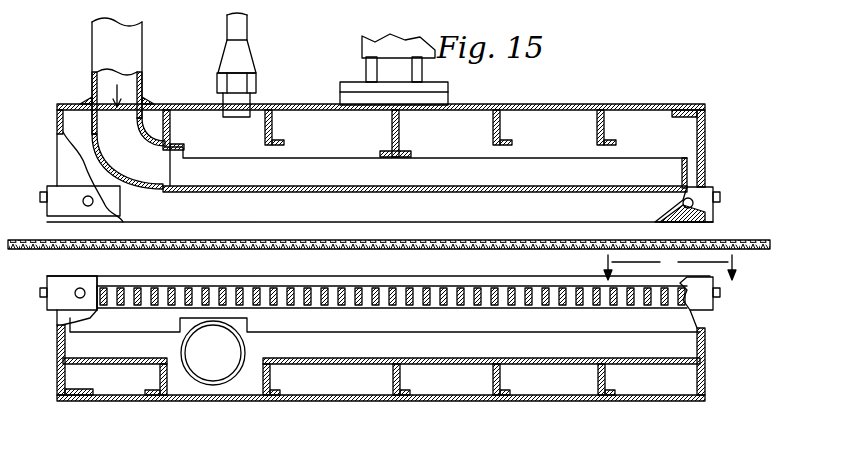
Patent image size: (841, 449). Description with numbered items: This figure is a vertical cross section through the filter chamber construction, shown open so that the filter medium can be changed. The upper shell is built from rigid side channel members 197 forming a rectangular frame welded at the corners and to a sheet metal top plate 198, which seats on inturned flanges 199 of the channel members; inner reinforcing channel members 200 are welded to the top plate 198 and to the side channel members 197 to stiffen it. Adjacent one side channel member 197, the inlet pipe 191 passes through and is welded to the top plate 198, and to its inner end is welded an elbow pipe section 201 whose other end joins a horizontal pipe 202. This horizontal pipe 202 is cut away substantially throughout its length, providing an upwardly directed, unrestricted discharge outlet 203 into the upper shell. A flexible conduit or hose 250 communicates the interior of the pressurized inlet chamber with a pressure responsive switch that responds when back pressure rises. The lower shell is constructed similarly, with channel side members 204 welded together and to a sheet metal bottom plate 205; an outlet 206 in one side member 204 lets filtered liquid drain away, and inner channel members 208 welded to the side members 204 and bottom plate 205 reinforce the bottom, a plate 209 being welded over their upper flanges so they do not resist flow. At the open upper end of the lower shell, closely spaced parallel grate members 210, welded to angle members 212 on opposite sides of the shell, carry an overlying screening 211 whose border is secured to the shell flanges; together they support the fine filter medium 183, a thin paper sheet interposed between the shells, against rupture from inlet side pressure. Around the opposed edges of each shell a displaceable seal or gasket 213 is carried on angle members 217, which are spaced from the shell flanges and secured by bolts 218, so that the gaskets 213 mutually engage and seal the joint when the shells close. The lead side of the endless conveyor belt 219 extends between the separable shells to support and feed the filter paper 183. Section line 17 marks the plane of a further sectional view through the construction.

The section line 17- 17 is at (671, 266).
The fine filter medium 183 is at (747, 242).
The inlet pipe 191 is at (100, 55).
The side channel members 197 is at (57, 124).
The top plate 198 is at (650, 92).
The inturned flanges 199 is at (79, 104).
The inner reinforcing channel members 200 is at (265, 130).
The elbow pipe section 201 is at (142, 190).
The horizontal pipe 202 is at (372, 193).
The discharge outlet 203 is at (533, 158).
The channel side members 204 is at (58, 351).
The bottom plate 205 is at (583, 400).
The outlet 206 is at (220, 374).
The inner channel members 208 is at (160, 379).
The plate 209 is at (463, 358).
The grate members 210 is at (160, 309).
The screening 211 is at (413, 284).
The angle members 212 is at (385, 323).
The seal or gasket 213 is at (53, 222).
The angle members 217 is at (62, 187).
The bolts 218 is at (43, 193).
The conveyor belt 219 is at (268, 252).
The flexible conduit or hose 250 is at (227, 24).